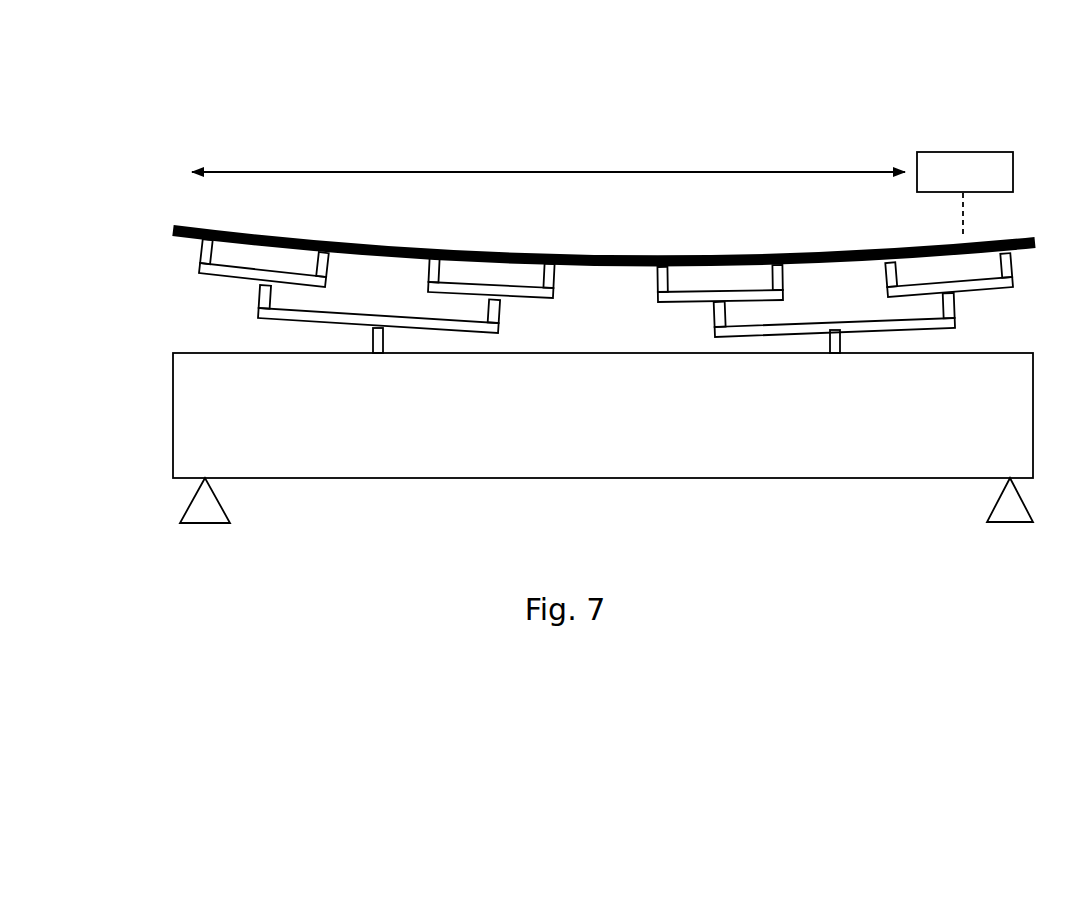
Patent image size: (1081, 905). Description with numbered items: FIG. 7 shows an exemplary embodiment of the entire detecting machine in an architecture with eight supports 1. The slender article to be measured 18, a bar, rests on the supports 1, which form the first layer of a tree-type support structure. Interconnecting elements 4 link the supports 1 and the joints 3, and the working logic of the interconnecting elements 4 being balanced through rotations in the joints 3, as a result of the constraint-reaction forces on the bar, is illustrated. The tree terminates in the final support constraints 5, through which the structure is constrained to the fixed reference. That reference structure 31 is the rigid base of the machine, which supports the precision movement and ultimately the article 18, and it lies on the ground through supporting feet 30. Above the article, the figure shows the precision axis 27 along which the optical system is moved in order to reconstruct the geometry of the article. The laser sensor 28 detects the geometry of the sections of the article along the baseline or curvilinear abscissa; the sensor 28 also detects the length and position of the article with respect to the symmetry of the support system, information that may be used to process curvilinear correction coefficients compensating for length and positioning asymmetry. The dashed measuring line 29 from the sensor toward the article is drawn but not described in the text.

The support 1 is at (195, 247).
The joint 3 is at (250, 290).
The interconnecting element 4 is at (312, 328).
The final support constraint 5 is at (367, 342).
The article to be measured 18 is at (182, 220).
The precision axis 27 is at (533, 163).
The sensor 28 is at (968, 145).
The measuring beam 29 is at (951, 205).
The supporting foot 30 is at (177, 507).
The reference structure 31 is at (582, 412).